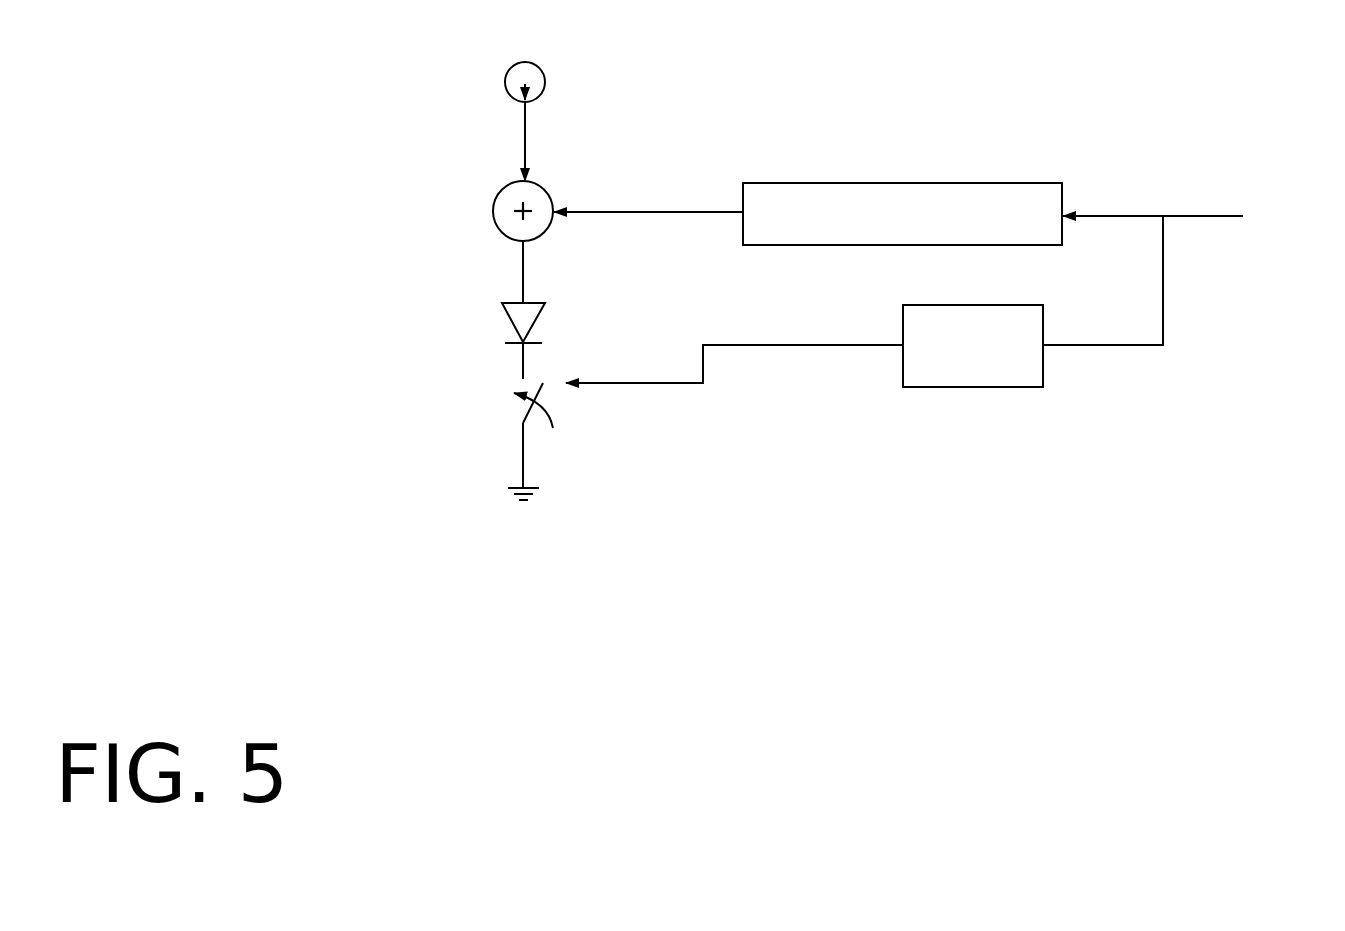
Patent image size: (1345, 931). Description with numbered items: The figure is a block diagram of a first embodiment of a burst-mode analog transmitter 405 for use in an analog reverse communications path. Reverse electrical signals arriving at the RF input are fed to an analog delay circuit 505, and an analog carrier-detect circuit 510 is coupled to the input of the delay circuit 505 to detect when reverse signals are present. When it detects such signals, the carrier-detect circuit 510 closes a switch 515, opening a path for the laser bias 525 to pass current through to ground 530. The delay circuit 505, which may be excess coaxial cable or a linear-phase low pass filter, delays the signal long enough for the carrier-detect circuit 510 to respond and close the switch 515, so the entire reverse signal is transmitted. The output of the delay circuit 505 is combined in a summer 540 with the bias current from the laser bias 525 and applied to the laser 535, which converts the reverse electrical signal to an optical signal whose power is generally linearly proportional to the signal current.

The burst-mode analog transmitter 405 is at (995, 593).
The analog delay circuit 505 is at (863, 183).
The analog carrier-detect circuit 510 is at (1023, 305).
The switch 515 is at (555, 393).
The laser bias 525 is at (545, 85).
The ground 530 is at (537, 500).
The laser 535 is at (485, 322).
The summer 540 is at (543, 186).